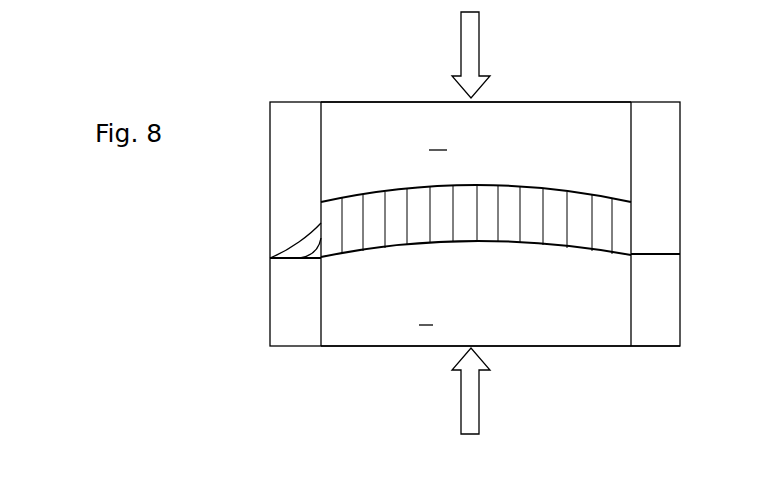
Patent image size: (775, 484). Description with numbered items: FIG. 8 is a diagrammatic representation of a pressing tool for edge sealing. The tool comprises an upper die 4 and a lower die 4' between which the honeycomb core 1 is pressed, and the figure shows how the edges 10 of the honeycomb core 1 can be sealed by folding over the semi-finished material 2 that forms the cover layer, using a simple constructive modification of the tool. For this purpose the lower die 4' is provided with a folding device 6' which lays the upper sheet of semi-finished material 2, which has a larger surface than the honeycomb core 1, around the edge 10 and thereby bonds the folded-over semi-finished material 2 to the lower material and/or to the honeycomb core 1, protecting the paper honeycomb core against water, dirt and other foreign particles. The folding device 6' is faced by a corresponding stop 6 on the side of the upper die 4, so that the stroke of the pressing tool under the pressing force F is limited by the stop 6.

The honeycomb core 1 is at (473, 215).
The semi-finished material 2 is at (270, 258).
The upper die 4 is at (476, 324).
The lower die 4' is at (476, 126).
The stop 6 is at (679, 352).
The folding device 6' is at (526, 224).
The edge 10 is at (662, 257).
The force F is at (468, 40).